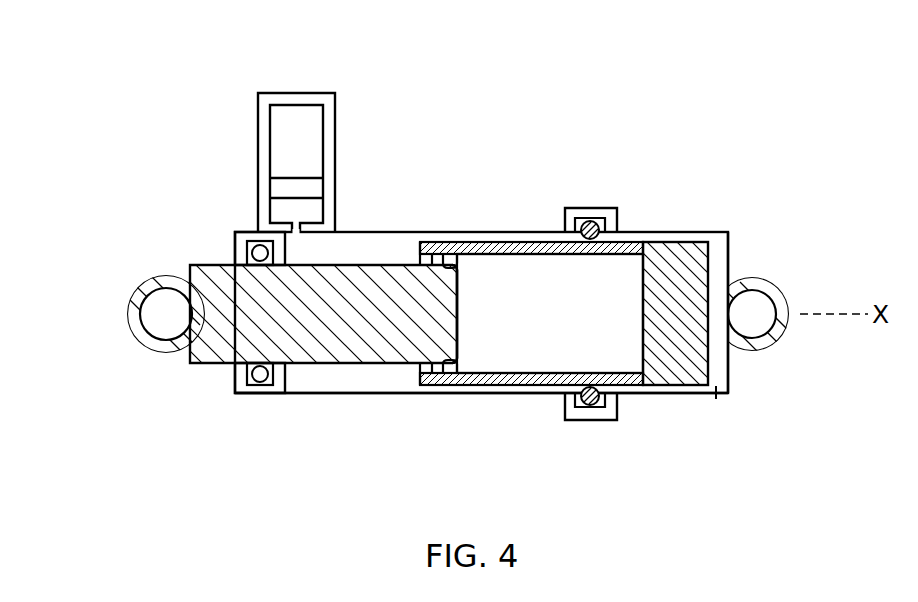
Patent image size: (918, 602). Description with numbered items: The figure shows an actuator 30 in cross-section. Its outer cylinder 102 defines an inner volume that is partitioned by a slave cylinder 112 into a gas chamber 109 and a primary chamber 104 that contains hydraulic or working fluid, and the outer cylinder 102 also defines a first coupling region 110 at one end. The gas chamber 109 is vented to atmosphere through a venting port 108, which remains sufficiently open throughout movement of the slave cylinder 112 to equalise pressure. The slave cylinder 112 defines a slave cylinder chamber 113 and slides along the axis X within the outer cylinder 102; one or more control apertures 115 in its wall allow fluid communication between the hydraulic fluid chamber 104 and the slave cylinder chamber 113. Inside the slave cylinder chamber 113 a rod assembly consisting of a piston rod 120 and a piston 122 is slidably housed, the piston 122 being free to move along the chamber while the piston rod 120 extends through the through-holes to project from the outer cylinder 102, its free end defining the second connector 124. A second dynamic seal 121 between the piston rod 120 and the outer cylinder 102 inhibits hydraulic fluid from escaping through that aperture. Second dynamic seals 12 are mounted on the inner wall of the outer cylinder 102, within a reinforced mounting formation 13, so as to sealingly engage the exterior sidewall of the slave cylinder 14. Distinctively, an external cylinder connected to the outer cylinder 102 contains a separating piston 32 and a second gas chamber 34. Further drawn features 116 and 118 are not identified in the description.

The actuator 30 is at (766, 189).
The second gas chamber 34 is at (295, 128).
The separating piston 32 is at (278, 188).
The primary chamber 104 is at (384, 245).
The gas chamber 109 is at (722, 366).
The slave cylinder 112 is at (502, 398).
The venting port 108 is at (718, 398).
The second dynamic seal 121 is at (250, 255).
The piston rod 120 is at (288, 364).
The piston 122 is at (456, 275).
The second connector 124 is at (128, 308).
The first coupling region 110 is at (762, 279).
The outer cylinder 102 is at (483, 241).
The control aperture 115 is at (548, 246).
The cylinder wall second portion 116 is at (625, 243).
The cylinder end cap 118 is at (418, 376).
The slave cylinder chamber 113 is at (623, 317).
The slave cylinder 14 is at (677, 389).
The second dynamic seal 12 is at (591, 222).
The reinforced mounting formation 13 is at (582, 222).